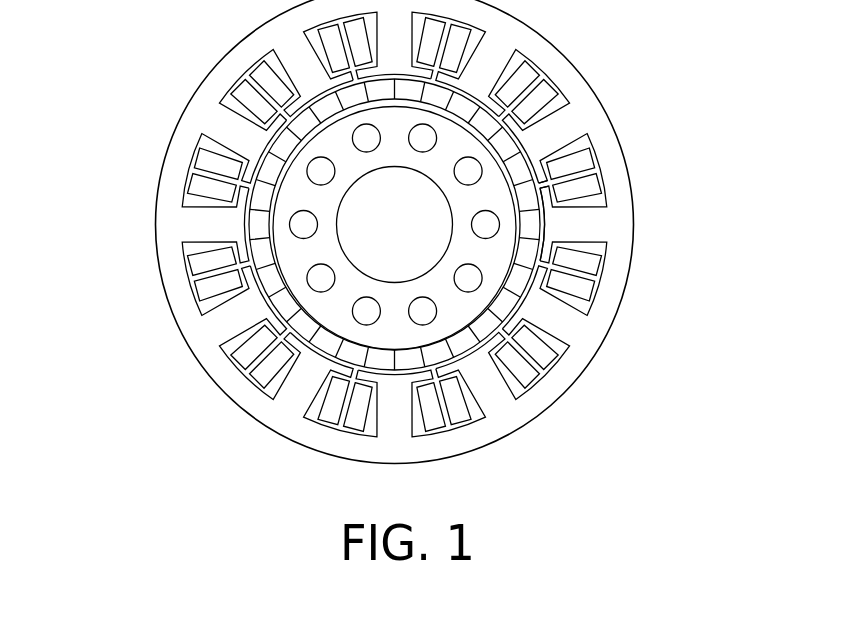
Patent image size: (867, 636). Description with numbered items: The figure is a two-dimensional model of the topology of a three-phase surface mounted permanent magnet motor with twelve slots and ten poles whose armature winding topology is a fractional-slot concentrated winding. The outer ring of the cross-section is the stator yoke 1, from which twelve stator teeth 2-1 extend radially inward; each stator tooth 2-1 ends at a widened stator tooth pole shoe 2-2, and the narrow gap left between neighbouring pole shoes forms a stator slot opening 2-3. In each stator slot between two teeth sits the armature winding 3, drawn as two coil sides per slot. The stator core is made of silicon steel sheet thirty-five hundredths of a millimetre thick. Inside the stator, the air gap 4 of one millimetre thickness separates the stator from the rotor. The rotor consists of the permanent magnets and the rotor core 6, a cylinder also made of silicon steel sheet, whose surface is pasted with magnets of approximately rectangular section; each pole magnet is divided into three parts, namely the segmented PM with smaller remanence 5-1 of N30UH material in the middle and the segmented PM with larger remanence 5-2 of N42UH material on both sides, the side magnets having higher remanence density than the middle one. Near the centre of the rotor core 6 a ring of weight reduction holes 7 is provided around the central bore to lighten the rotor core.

The stator yoke 1 is at (565, 83).
The stator tooth 2-1 is at (558, 137).
The stator tooth pole shoe 2-2 is at (550, 225).
The stator slot opening 2-3 is at (542, 186).
The armature winding 3 is at (582, 288).
The air gap 4 is at (257, 167).
The segmented PM with smaller remanence 5-1 is at (258, 225).
The segmented PM with larger remanence 5-2 is at (262, 253).
The rotor core 6 is at (313, 298).
The weight reduction hole of rotor core 7 is at (367, 311).